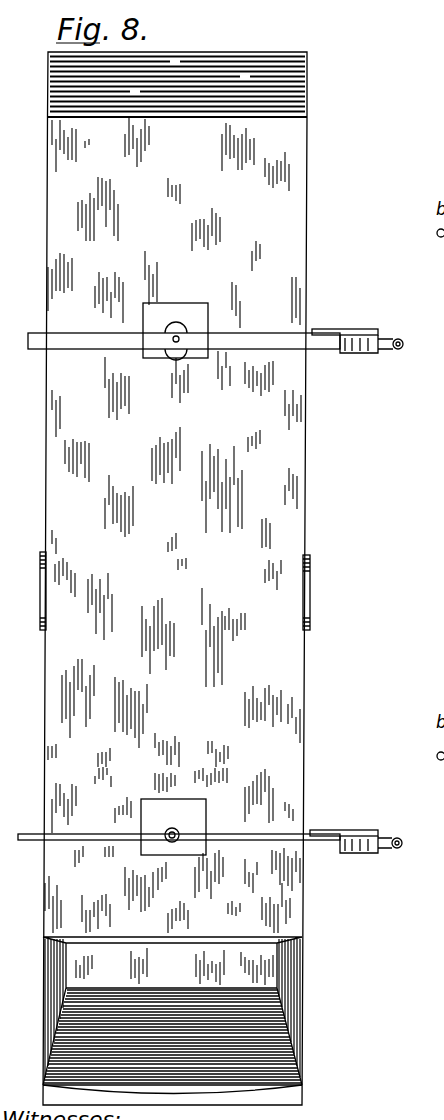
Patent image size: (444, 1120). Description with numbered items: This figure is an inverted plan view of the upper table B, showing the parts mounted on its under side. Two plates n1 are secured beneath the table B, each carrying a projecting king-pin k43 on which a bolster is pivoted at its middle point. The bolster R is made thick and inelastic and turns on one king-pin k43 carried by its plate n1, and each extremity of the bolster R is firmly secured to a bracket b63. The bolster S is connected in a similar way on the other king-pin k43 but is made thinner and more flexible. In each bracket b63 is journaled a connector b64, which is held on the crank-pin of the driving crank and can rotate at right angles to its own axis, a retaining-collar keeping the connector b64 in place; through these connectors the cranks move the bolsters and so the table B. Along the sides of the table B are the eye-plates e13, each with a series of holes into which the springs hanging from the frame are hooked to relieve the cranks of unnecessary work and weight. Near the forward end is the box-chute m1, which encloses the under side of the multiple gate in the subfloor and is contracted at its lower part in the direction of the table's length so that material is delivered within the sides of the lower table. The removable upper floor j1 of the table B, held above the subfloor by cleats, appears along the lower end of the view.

The upper table B is at (175, 578).
The bolster R is at (184, 358).
The bolster S is at (313, 843).
The pivot block n1 is at (174, 579).
The king-pin k43 is at (338, 722).
The bracket b63 is at (344, 580).
The connector b64 is at (405, 578).
The eye-plate e13 is at (320, 572).
The box-chute m1 is at (318, 997).
The upper floor j1 is at (330, 1060).